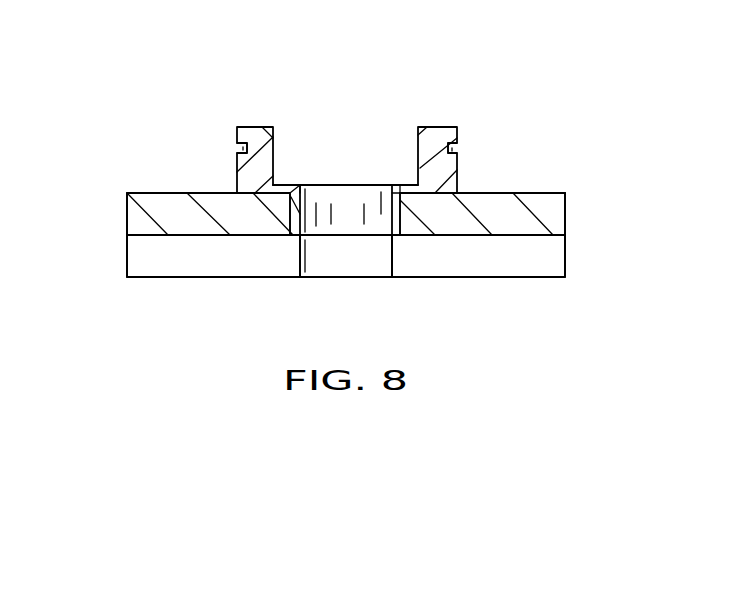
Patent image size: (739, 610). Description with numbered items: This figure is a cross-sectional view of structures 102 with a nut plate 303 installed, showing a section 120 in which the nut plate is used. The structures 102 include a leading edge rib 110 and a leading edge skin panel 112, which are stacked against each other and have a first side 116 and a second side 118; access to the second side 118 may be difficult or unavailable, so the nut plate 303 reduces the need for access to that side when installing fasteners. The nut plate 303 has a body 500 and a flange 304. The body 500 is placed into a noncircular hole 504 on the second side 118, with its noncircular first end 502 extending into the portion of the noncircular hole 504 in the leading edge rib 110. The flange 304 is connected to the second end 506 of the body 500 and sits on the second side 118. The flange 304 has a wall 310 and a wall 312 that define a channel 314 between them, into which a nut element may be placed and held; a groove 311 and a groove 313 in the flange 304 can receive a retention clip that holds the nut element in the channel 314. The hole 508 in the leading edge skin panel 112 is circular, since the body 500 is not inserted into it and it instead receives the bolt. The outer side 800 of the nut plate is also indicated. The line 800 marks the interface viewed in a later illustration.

The structures 102 is at (321, 72).
The section 120 is at (371, 106).
The leading edge rib 110 is at (127, 214).
The outer side 800 is at (146, 235).
The first side 116 is at (162, 280).
The body 500 is at (292, 213).
The nut plate 303 is at (237, 184).
The wall 312 is at (255, 127).
The groove 313 is at (237, 147).
The channel 314 is at (320, 168).
The flange 304 is at (417, 153).
The noncircular hole 504 is at (392, 222).
The hole 508 is at (393, 262).
The first end 502 is at (400, 203).
The second end 506 is at (437, 197).
The wall 310 is at (447, 127).
The groove 311 is at (459, 148).
The second side 118 is at (553, 193).
The leading edge skin panel 112 is at (556, 257).